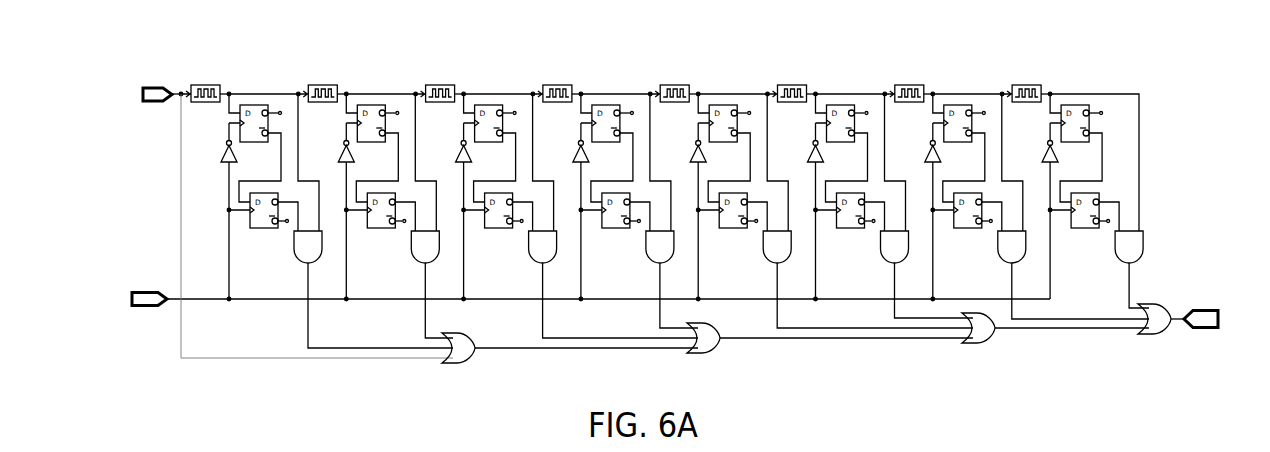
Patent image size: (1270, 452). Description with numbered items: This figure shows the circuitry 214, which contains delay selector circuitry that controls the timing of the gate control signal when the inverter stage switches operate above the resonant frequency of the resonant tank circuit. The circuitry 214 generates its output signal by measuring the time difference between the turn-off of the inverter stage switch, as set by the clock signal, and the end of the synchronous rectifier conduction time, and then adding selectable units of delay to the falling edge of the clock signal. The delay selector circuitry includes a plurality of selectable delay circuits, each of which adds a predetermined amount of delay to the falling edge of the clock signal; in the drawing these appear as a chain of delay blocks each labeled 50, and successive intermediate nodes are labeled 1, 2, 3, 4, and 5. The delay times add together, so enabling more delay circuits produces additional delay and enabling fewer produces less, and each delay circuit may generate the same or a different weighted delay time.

The ASW circuitry 214 is at (285, 28).
The 50n delay element 50 is at (611, 87).
The node V1 1 is at (317, 226).
The node V2 2 is at (380, 305).
The node V3 3 is at (429, 300).
The node V4 4 is at (612, 300).
The node V5 5 is at (669, 297).